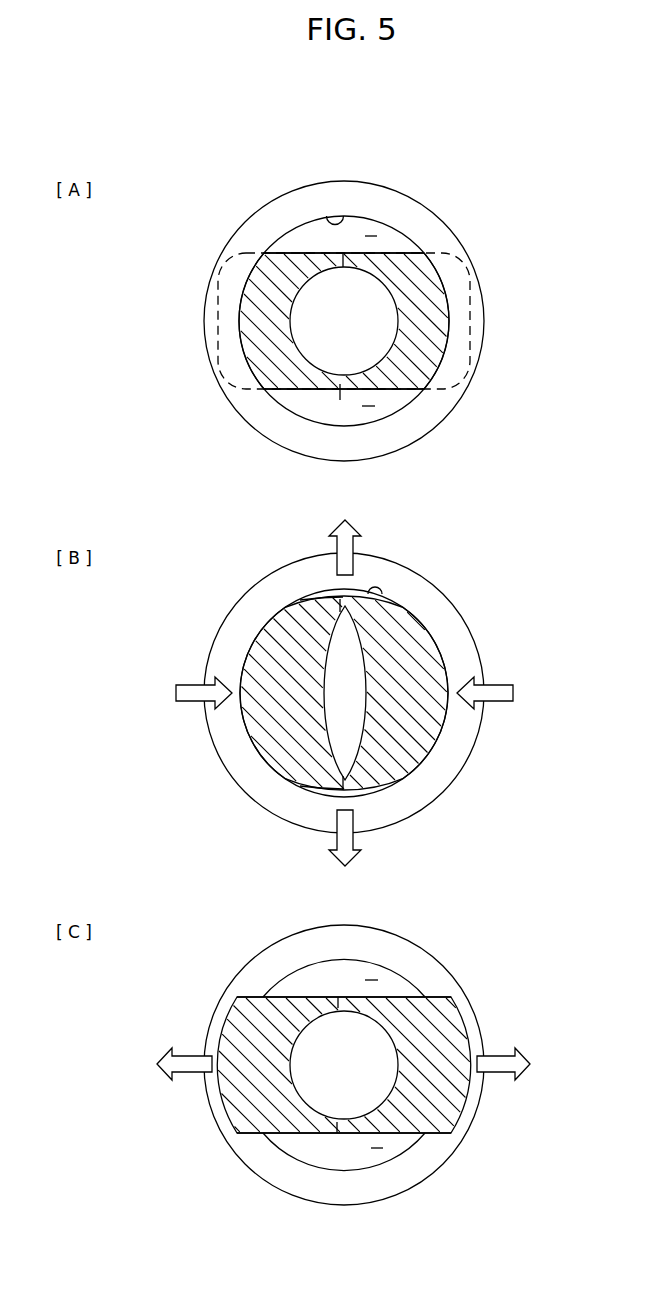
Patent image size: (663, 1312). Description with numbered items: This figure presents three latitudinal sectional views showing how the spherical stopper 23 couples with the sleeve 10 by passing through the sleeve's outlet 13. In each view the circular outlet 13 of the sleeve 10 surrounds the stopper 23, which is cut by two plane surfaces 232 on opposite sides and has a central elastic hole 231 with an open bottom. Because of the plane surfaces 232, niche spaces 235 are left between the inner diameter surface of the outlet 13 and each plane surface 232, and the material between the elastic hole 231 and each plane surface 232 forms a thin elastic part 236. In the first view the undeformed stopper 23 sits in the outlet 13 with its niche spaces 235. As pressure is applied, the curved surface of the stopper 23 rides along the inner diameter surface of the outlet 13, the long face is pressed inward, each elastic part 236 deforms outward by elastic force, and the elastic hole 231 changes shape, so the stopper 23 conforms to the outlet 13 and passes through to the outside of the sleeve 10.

The sleeve 10 is at (190, 328).
The outlet 13 is at (327, 212).
The stopper 23 is at (464, 276).
The elastic hole 231 is at (330, 331).
The plane surfaces 232 is at (313, 253).
The niche spaces 235 is at (371, 235).
The elastic parts 236 is at (343, 267).